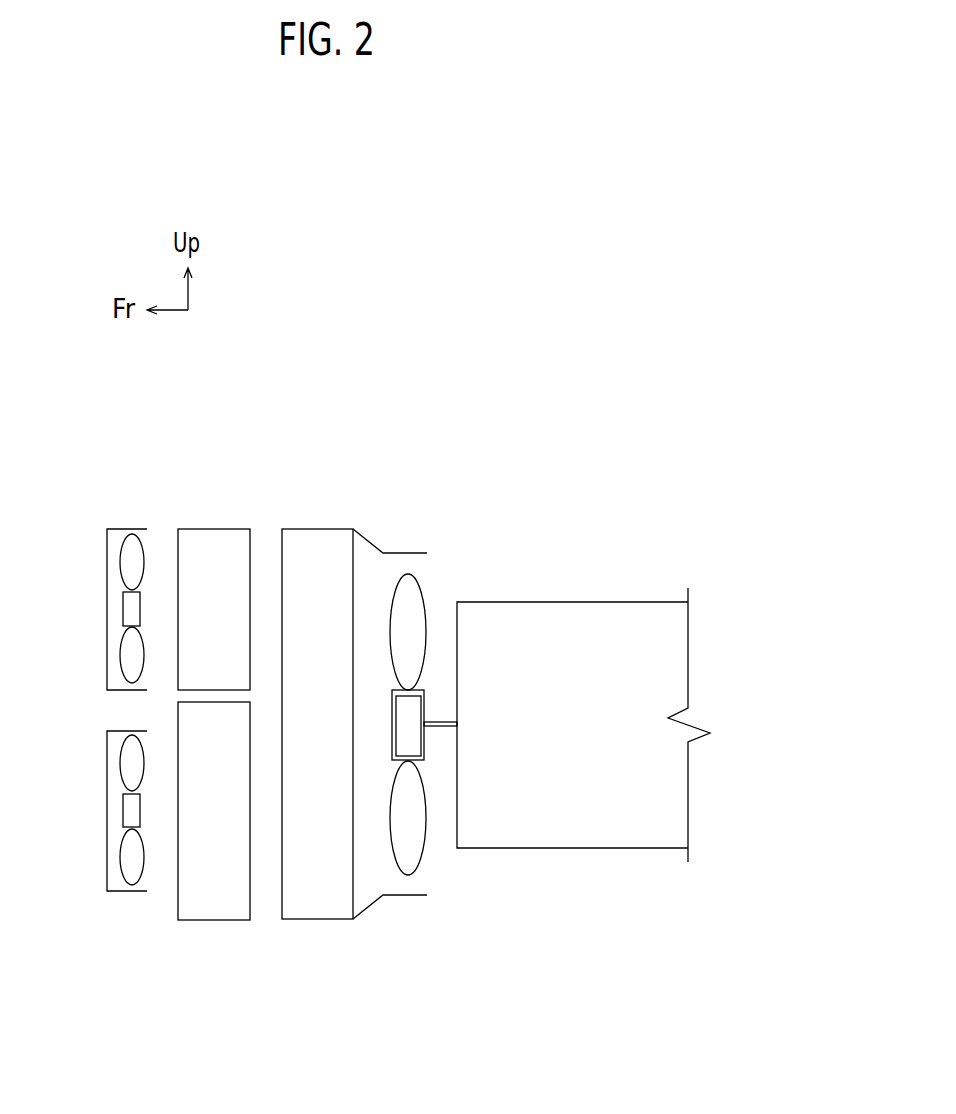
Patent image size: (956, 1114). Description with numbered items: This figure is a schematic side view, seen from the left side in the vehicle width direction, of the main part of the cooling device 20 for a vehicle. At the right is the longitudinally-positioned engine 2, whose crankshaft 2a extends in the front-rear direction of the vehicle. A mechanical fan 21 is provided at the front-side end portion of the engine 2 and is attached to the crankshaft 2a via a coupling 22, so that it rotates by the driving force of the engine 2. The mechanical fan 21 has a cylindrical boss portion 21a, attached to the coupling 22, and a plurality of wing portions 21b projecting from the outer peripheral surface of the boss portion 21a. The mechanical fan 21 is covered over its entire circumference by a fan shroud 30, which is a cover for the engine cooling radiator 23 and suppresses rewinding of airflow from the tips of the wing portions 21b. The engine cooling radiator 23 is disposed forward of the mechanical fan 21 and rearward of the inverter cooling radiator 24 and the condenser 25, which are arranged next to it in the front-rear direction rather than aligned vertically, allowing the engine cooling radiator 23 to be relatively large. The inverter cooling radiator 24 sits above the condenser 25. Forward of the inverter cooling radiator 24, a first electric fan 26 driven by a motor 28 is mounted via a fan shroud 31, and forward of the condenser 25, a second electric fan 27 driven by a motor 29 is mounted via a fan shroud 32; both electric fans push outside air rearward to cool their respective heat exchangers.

The engine 2 is at (578, 596).
The crankshaft 2a is at (443, 727).
The cooling device 20 is at (260, 486).
The mechanical fan 21 is at (441, 850).
The boss portion 21a is at (392, 700).
The wing portions 21b is at (408, 590).
The coupling 22 is at (417, 713).
The engine cooling radiator 23 is at (315, 905).
The inverter cooling radiator 24 is at (215, 540).
The condenser 25 is at (209, 910).
The first electric fan 26 is at (157, 555).
The second electric fan 27 is at (160, 855).
The motor 28 is at (128, 610).
The motor 29 is at (128, 808).
The fan shroud 30 is at (368, 910).
The fan shroud 31 is at (118, 528).
The fan shroud 32 is at (118, 897).